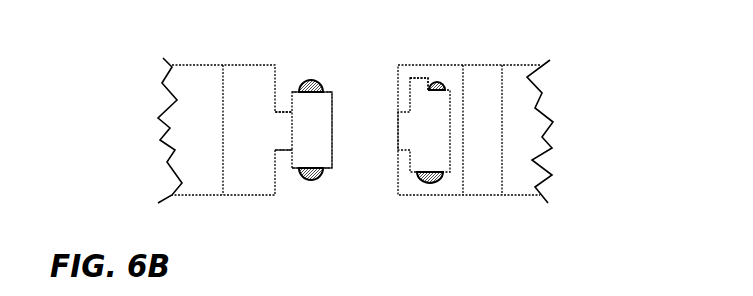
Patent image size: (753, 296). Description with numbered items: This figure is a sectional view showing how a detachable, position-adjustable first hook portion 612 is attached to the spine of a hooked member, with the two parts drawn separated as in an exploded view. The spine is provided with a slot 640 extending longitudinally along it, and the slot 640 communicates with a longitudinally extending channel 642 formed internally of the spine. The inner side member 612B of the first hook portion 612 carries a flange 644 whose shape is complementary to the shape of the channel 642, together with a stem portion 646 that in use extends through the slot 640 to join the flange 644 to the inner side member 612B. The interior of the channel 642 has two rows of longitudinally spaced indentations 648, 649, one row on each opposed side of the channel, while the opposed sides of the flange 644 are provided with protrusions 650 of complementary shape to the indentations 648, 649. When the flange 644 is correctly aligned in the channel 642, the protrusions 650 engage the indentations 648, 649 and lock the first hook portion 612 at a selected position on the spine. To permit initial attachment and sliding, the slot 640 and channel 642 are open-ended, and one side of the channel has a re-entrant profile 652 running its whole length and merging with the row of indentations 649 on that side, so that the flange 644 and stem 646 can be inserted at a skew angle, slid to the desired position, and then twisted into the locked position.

The first hook portion 612 is at (191, 61).
The inner side member 612B is at (223, 115).
The flange 644 is at (322, 84).
The stem portion 646 is at (253, 177).
The protrusions 650 is at (311, 80).
The slot 640 is at (398, 130).
The channel 642 is at (448, 143).
The re-entrant profile 652 is at (416, 78).
The indentations 649 is at (434, 84).
The indentations 648 is at (430, 180).